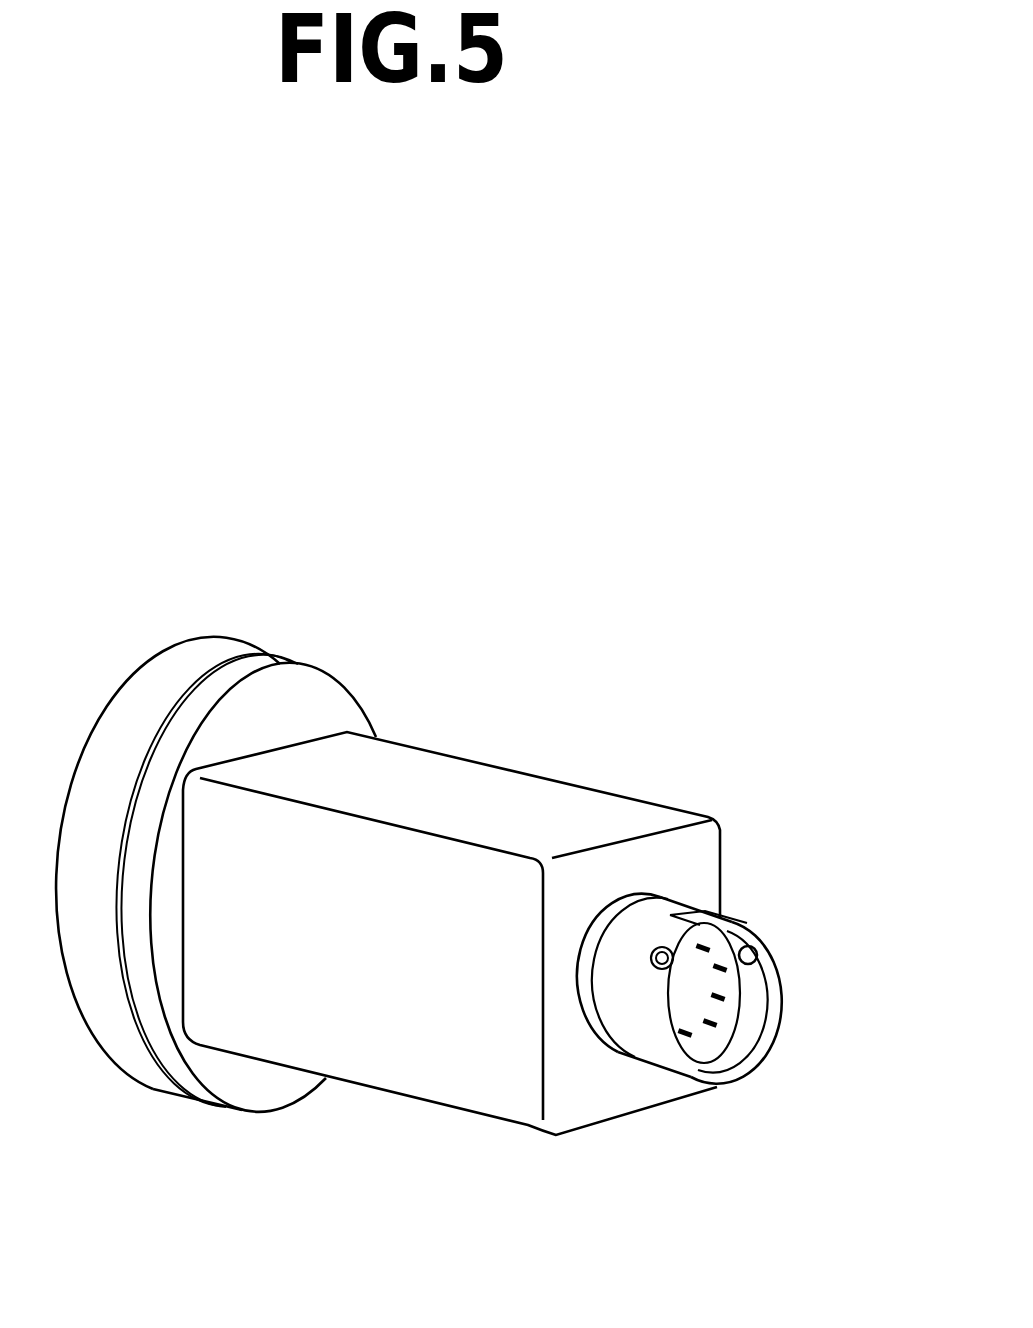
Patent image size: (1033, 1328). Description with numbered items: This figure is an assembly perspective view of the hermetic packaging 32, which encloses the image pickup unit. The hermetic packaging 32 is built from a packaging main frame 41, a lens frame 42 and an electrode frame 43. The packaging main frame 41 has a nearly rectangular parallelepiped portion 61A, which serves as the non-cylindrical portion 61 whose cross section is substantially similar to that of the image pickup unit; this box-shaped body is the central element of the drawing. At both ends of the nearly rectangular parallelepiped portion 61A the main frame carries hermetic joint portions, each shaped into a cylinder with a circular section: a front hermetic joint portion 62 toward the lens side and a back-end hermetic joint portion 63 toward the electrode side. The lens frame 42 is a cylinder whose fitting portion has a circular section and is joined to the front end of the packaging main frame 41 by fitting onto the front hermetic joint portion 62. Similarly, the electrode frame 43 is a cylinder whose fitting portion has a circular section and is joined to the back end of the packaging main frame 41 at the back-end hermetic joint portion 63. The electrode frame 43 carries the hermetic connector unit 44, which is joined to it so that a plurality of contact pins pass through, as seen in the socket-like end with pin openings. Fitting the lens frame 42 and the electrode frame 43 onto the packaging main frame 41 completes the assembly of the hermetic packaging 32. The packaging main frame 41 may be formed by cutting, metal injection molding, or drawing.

The hermetic packaging 32 is at (776, 420).
The packaging main frame 41 is at (807, 583).
The lens frame 42 is at (223, 640).
The front hermetic joint portion 62 is at (333, 707).
The nearly rectangular parallelepiped portion 61A is at (547, 778).
The non-cylindrical portion 61 is at (451, 848).
The back-end hermetic joint portion 63 is at (607, 905).
The electrode frame 43 is at (685, 903).
The hermetic connector unit 44 is at (707, 1043).